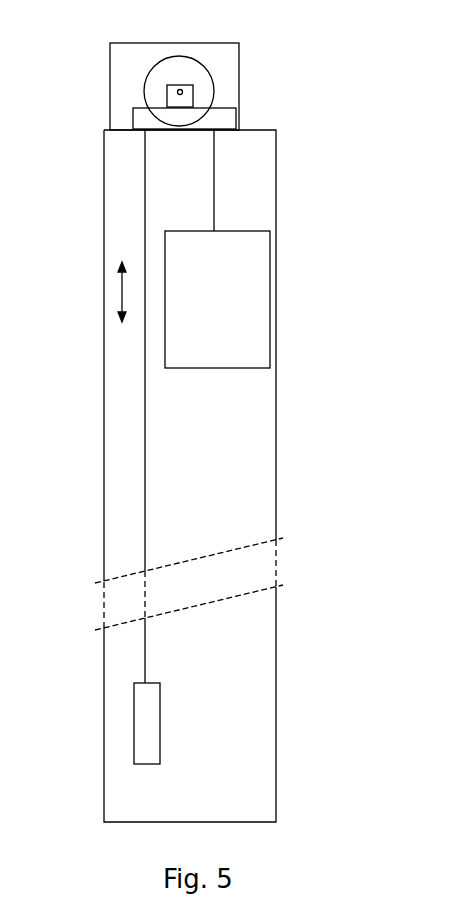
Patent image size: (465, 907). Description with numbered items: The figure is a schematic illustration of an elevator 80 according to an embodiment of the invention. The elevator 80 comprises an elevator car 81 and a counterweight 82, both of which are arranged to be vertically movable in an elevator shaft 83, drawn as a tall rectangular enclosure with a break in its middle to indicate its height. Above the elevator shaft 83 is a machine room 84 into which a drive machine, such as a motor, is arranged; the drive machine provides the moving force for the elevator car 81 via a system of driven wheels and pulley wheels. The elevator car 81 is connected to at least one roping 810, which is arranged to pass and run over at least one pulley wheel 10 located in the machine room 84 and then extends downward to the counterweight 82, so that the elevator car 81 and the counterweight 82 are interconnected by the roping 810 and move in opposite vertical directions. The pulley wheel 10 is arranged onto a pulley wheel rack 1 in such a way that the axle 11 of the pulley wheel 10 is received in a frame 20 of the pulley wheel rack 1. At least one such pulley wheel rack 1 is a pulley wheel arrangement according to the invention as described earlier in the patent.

The pulley wheel rack 1 is at (225, 117).
The pulley wheel 10 is at (197, 73).
The axle 11 is at (193, 85).
The frame 20 is at (192, 95).
The elevator 80 is at (289, 461).
The elevator car 81 is at (223, 312).
The counterweight 82 is at (143, 730).
The elevator shaft 83 is at (254, 663).
The machine room 84 is at (130, 83).
The roping 810 is at (214, 192).